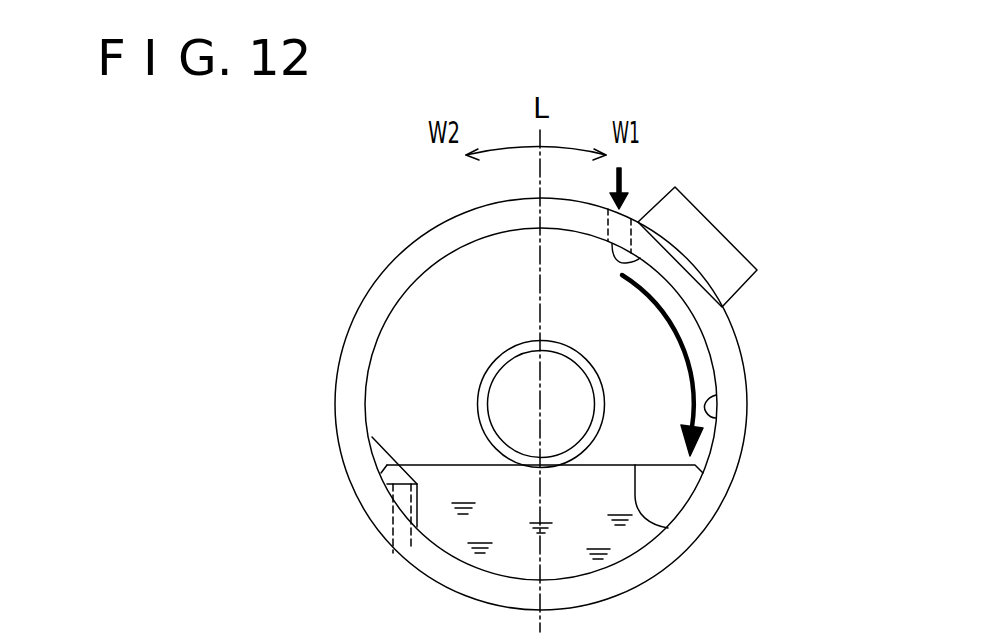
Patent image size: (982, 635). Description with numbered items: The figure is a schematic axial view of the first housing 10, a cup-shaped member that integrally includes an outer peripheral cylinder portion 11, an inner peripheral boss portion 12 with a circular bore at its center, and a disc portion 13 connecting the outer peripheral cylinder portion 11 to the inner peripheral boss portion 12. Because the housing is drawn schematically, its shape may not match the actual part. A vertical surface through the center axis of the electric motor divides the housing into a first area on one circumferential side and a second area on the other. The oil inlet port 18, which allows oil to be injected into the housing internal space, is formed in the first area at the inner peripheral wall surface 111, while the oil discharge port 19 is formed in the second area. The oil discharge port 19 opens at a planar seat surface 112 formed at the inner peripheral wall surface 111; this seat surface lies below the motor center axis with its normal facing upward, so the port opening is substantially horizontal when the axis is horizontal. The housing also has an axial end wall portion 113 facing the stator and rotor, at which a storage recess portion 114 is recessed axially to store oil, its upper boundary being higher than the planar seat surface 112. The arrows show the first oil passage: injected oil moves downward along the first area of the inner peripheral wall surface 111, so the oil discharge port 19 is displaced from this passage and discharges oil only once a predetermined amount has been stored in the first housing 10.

The first housing 10 is at (745, 364).
The outer peripheral cylinder portion 11 is at (408, 270).
The inner peripheral boss portion 12 is at (482, 388).
The disc portion 13 is at (458, 319).
The oil inlet port 18 is at (688, 333).
The oil discharge port 19 is at (410, 497).
The inner peripheral wall surface 111 is at (716, 418).
The planar seat surface 112 is at (371, 435).
The axial end wall portion 113 is at (722, 313).
The storage recess portion 114 is at (668, 528).